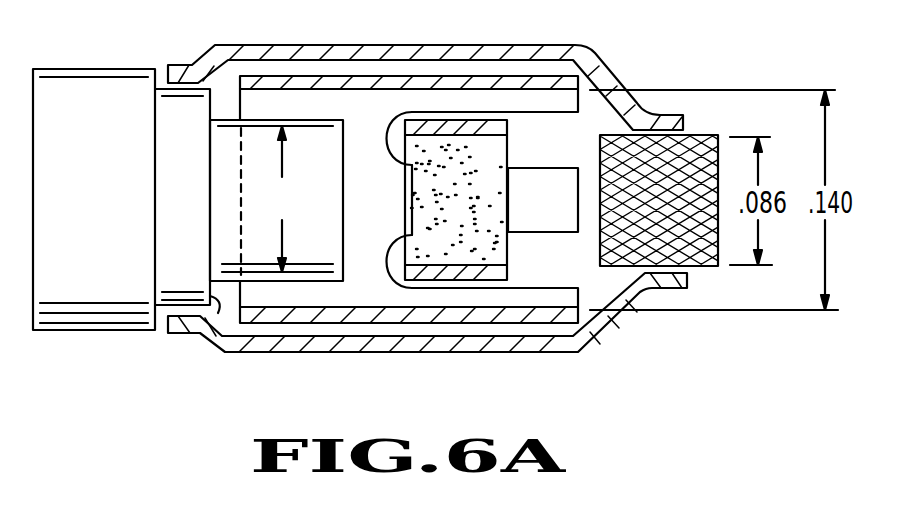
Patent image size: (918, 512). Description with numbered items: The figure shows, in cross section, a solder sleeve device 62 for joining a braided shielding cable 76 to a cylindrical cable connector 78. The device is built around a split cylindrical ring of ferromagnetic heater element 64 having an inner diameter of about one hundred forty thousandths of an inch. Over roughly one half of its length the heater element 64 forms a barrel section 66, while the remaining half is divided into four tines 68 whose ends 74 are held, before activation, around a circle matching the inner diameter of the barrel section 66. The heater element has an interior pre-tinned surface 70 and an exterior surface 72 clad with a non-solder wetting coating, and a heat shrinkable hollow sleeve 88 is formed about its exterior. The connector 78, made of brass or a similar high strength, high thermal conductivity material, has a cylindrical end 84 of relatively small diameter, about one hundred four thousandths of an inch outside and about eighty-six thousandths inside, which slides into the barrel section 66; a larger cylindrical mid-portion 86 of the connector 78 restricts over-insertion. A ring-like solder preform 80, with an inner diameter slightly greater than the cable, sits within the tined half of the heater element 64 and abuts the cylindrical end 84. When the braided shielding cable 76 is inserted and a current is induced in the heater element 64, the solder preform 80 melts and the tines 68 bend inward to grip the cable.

The solder sleeve device 62 is at (442, 195).
The ferromagnetic heater element 64 is at (383, 77).
The barrel section 66 is at (313, 300).
The tines 68 is at (466, 198).
The interior pre-tinned surface 70 is at (402, 93).
The exterior surface 72 is at (402, 206).
The ends of the tines 74 is at (577, 203).
The braided shielding cable 76 is at (707, 137).
The cylindrical cable connector 78 is at (112, 70).
The solder preform 80 is at (407, 197).
The cylindrical end 84 is at (342, 262).
The cylindrical mid-portion 86 is at (197, 340).
The heat shrinkable hollow sleeve 88 is at (547, 45).